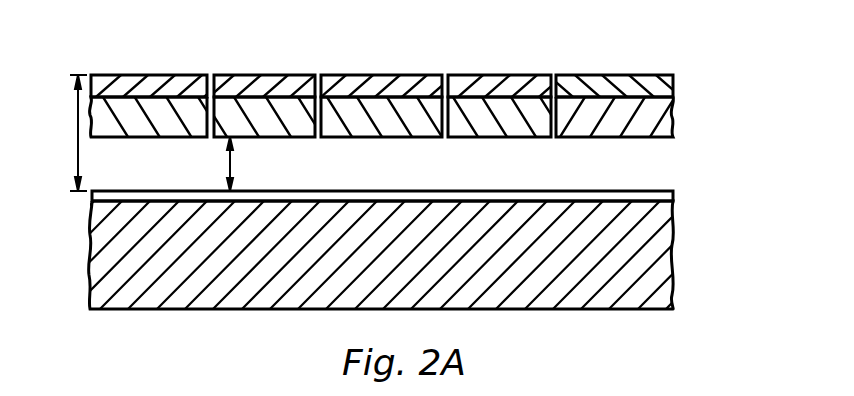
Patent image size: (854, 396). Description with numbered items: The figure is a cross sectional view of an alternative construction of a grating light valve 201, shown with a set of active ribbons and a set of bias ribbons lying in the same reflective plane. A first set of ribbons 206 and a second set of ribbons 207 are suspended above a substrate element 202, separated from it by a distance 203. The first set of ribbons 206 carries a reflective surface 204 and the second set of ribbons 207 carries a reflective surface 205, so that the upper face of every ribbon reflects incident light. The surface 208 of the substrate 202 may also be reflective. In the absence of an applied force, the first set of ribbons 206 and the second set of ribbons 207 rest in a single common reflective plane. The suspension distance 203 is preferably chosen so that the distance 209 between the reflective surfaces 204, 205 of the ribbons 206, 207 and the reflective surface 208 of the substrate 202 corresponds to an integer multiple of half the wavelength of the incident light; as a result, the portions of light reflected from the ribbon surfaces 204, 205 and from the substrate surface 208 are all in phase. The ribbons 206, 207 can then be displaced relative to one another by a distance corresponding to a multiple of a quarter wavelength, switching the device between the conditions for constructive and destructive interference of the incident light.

The light modulator structure 201 is at (648, 162).
The substrate element 202 is at (673, 257).
The distance 203 is at (233, 172).
The reflective surface 204 is at (143, 75).
The reflective surface 205 is at (258, 75).
The first set of ribbons 206 is at (673, 112).
The second set of ribbons 207 is at (278, 137).
The reflective surface of the substrate 208 is at (675, 191).
The distance 209 is at (78, 128).